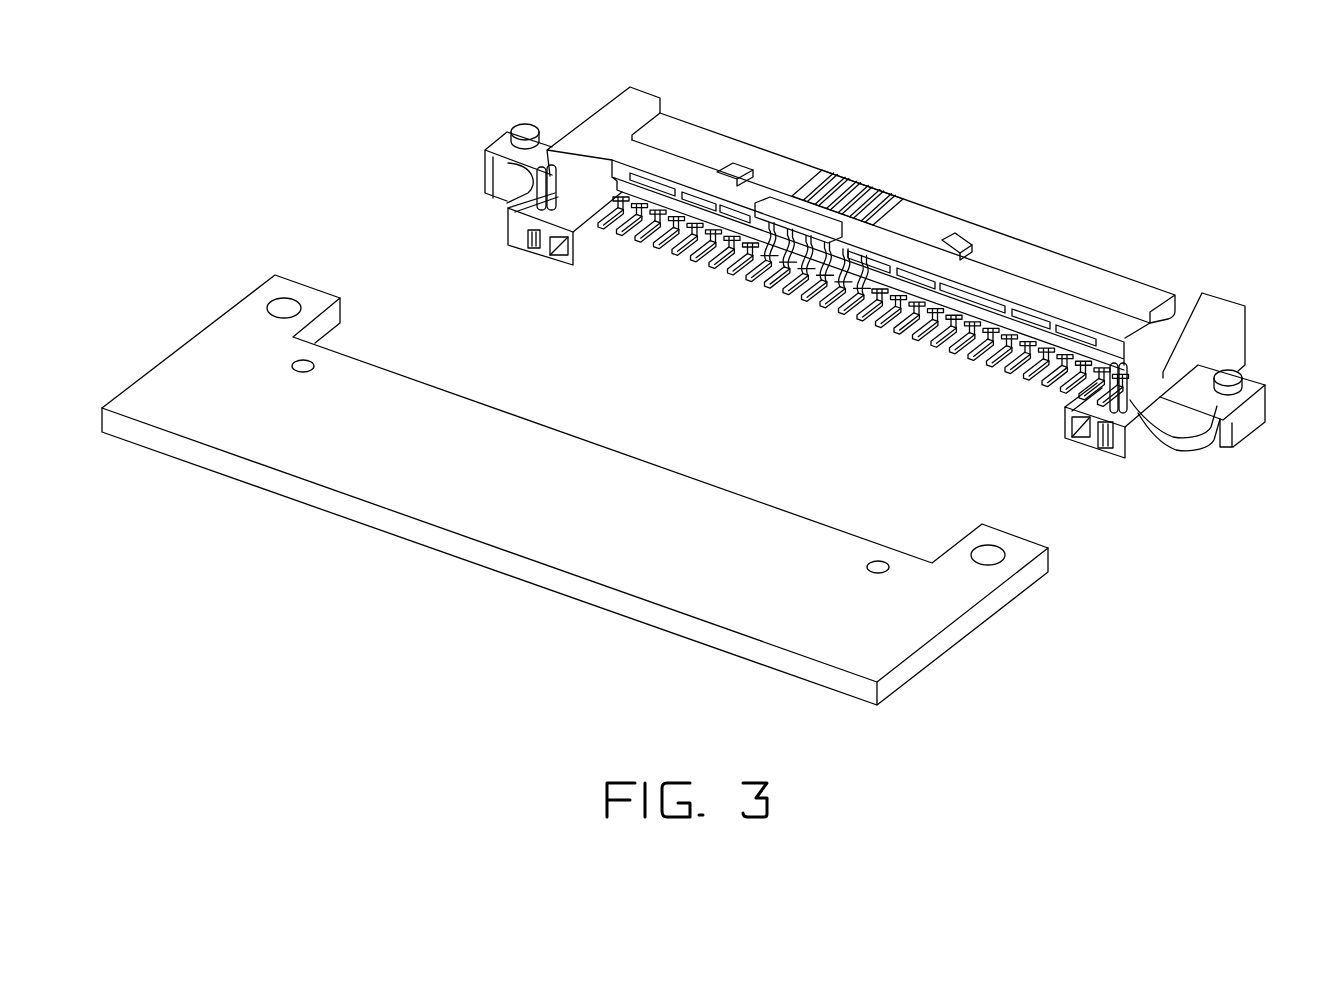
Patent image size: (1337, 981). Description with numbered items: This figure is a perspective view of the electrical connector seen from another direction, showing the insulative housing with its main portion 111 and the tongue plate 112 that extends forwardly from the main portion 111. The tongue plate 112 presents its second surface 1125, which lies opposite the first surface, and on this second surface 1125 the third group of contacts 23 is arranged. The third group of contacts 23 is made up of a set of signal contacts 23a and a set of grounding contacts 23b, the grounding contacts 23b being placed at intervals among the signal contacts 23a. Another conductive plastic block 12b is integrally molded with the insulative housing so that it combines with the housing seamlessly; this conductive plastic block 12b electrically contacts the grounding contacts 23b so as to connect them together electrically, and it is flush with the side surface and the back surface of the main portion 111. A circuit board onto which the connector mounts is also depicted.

The main portion 111 is at (683, 173).
The tongue plate 112 is at (765, 163).
The second surface 1125 is at (975, 235).
The third group of contacts 23 is at (1023, 153).
The signal contacts 23a is at (875, 200).
The grounding contacts 23b is at (895, 198).
The another conductive plastic block 12b is at (737, 270).